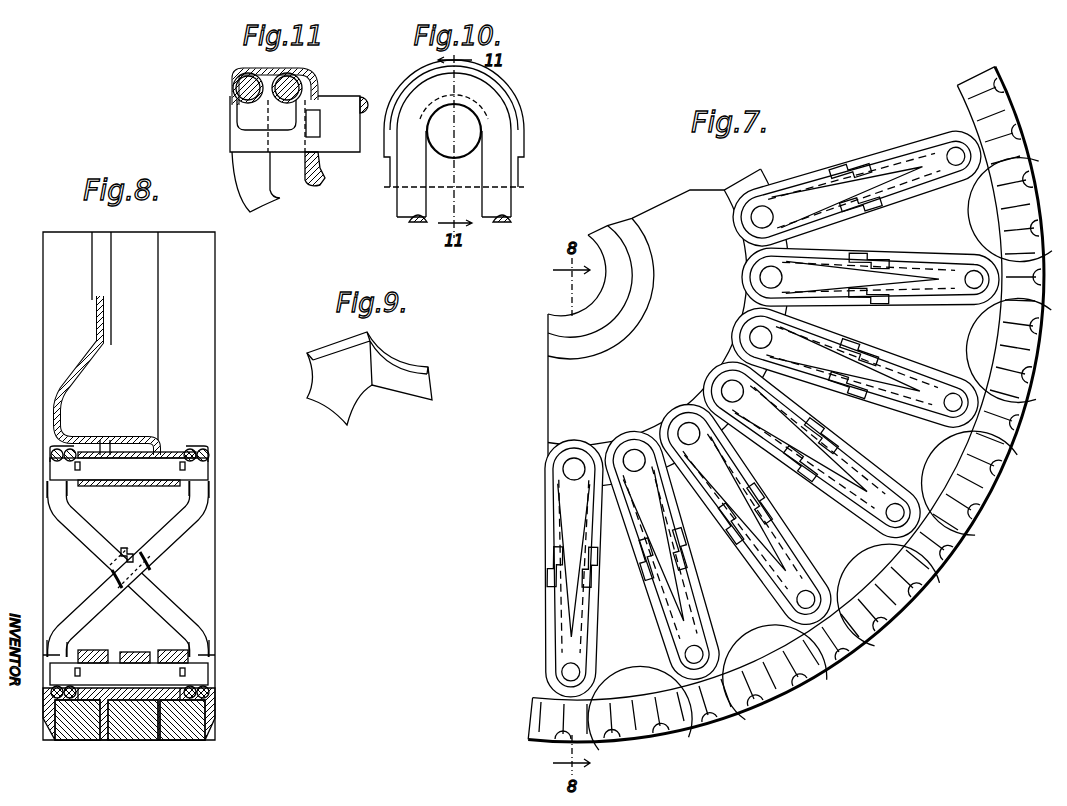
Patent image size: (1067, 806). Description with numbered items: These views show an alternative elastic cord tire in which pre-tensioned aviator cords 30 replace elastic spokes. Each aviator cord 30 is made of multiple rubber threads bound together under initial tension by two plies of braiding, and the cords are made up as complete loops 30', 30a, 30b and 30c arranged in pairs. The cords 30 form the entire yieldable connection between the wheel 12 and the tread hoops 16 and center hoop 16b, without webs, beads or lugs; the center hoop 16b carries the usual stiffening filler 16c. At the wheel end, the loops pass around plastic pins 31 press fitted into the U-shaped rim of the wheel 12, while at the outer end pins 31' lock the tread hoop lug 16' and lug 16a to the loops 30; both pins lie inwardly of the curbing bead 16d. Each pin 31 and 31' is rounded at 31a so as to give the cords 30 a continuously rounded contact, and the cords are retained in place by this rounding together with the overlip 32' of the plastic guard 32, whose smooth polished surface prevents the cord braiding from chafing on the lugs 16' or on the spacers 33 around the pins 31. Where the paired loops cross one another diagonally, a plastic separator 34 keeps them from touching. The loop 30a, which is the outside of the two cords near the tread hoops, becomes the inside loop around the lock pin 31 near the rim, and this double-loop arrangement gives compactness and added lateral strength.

In FIG. 7, the wheel 12 is at (548, 405).
In FIG. 8, the wheel 12 is at (60, 402).
In FIG. 7, the tread hoop 16 is at (790, 409).
In FIG. 8, the tread hoop 16 is at (144, 716).
In FIG. 8, the tread hoop lug 16' is at (136, 645).
In FIG. 8, the lug 16a is at (120, 655).
In FIG. 8, the center hoop 16b is at (110, 742).
In FIG. 8, the stiffening filler 16c is at (72, 740).
In FIG. 8, the curbing bead 16d is at (212, 700).
In FIG. 7, the aviator cord 30 is at (770, 407).
In FIG. 8, the aviator cord 30 is at (149, 588).
In FIG. 8, the cord loop 30' is at (151, 551).
In FIG. 11, the cord loop 30' is at (294, 76).
In FIG. 8, the cord loop 30a is at (160, 535).
In FIG. 8, the cord loop 30b is at (90, 524).
In FIG. 11, the cord loop 30b is at (234, 92).
In FIG. 8, the cord loop 30c is at (207, 490).
In FIG. 7, the plastic pin 31 is at (672, 341).
In FIG. 8, the plastic pin 31 is at (129, 450).
In FIG. 10, the plastic pin 31 is at (454, 163).
In FIG. 11, the plastic pin 31 is at (373, 91).
In FIG. 7, the pin 31' is at (772, 413).
In FIG. 8, the pin 31' is at (129, 652).
In FIG. 10, the rounded portion 31a is at (480, 115).
In FIG. 11, the rounded portion 31a is at (250, 120).
In FIG. 8, the plastic guard 32 is at (133, 437).
In FIG. 10, the plastic guard 32 is at (465, 141).
In FIG. 11, the plastic guard 32 is at (317, 87).
In FIG. 8, the overlip 32' is at (155, 570).
In FIG. 10, the overlip 32' is at (458, 123).
In FIG. 11, the overlip 32' is at (228, 84).
In FIG. 8, the spacer 33 is at (108, 452).
In FIG. 7, the plastic separator 34 is at (826, 392).
In FIG. 8, the plastic separator 34 is at (152, 563).
In FIG. 9, the plastic separator 34 is at (420, 380).